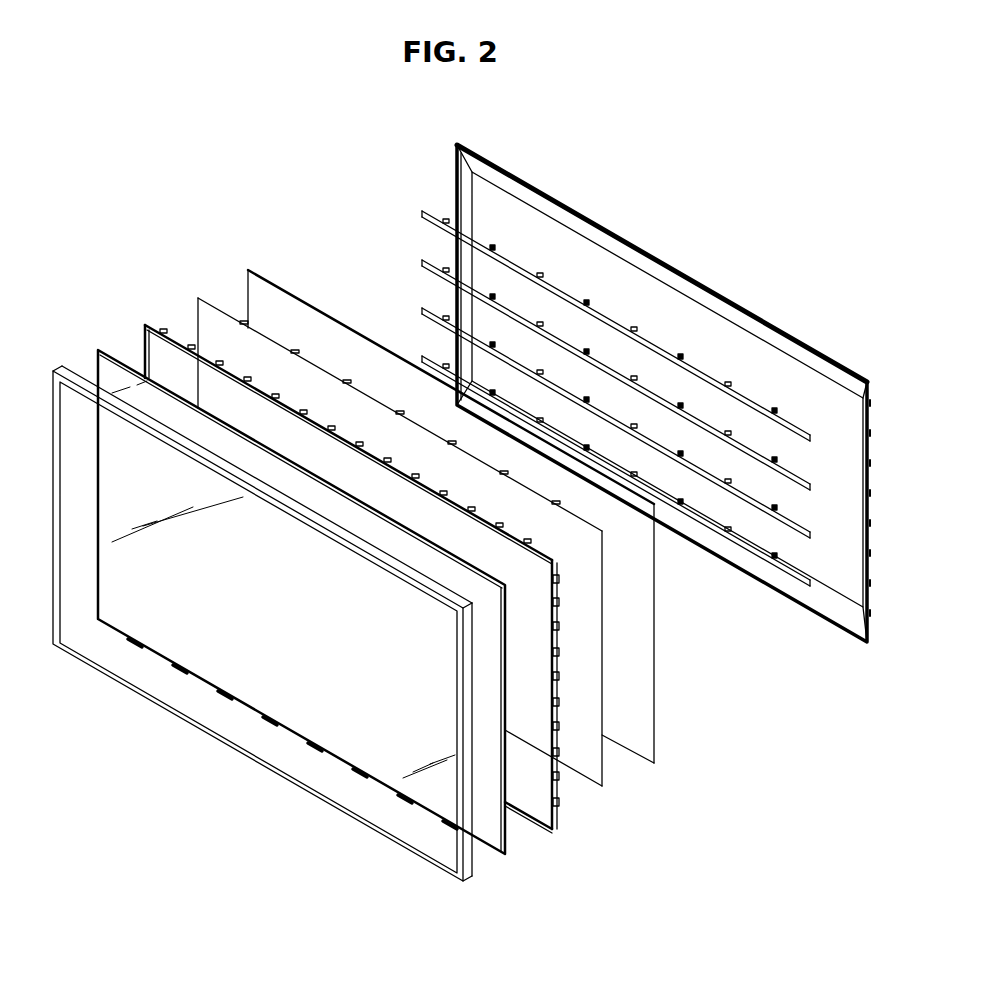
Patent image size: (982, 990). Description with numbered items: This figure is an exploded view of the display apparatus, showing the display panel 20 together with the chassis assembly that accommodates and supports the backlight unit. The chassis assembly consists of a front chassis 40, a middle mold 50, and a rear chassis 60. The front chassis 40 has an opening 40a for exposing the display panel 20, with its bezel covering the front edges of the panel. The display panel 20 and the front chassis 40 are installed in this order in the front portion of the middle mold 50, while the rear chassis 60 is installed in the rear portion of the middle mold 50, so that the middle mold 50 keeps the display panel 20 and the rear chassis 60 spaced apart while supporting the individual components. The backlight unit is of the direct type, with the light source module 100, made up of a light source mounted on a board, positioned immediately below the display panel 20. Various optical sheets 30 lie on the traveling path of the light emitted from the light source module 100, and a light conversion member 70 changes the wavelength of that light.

The display panel 20 is at (509, 845).
The optical sheets 30 is at (603, 790).
The front chassis 40 is at (262, 652).
The opening 40a is at (333, 777).
The middle mold 50 is at (564, 832).
The rear chassis 60 is at (692, 279).
The light conversion member 70 is at (660, 758).
The light source module 100 is at (418, 209).